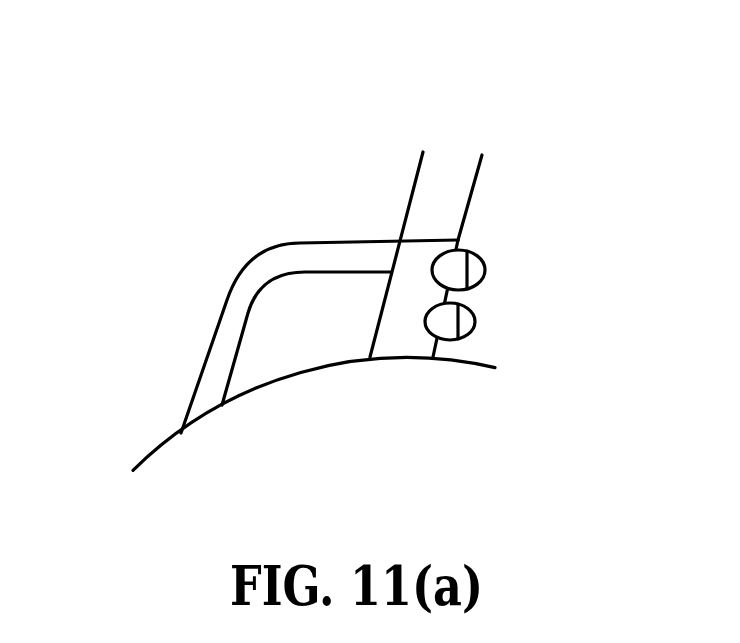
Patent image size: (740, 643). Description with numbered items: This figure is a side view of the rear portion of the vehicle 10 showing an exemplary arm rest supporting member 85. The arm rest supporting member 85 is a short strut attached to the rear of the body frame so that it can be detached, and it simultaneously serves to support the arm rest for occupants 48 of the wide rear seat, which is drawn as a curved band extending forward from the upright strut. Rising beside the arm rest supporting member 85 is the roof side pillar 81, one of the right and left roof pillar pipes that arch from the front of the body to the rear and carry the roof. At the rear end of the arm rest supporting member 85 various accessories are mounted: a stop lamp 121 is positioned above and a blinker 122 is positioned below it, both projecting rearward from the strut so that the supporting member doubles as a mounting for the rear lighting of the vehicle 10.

The vehicle 10 is at (130, 153).
The arm rest for occupants 48 is at (300, 250).
The roof side pillar 81 is at (465, 177).
The arm rest supporting member 85 is at (427, 250).
The stop lamp 121 is at (477, 268).
The blinker 122 is at (465, 322).